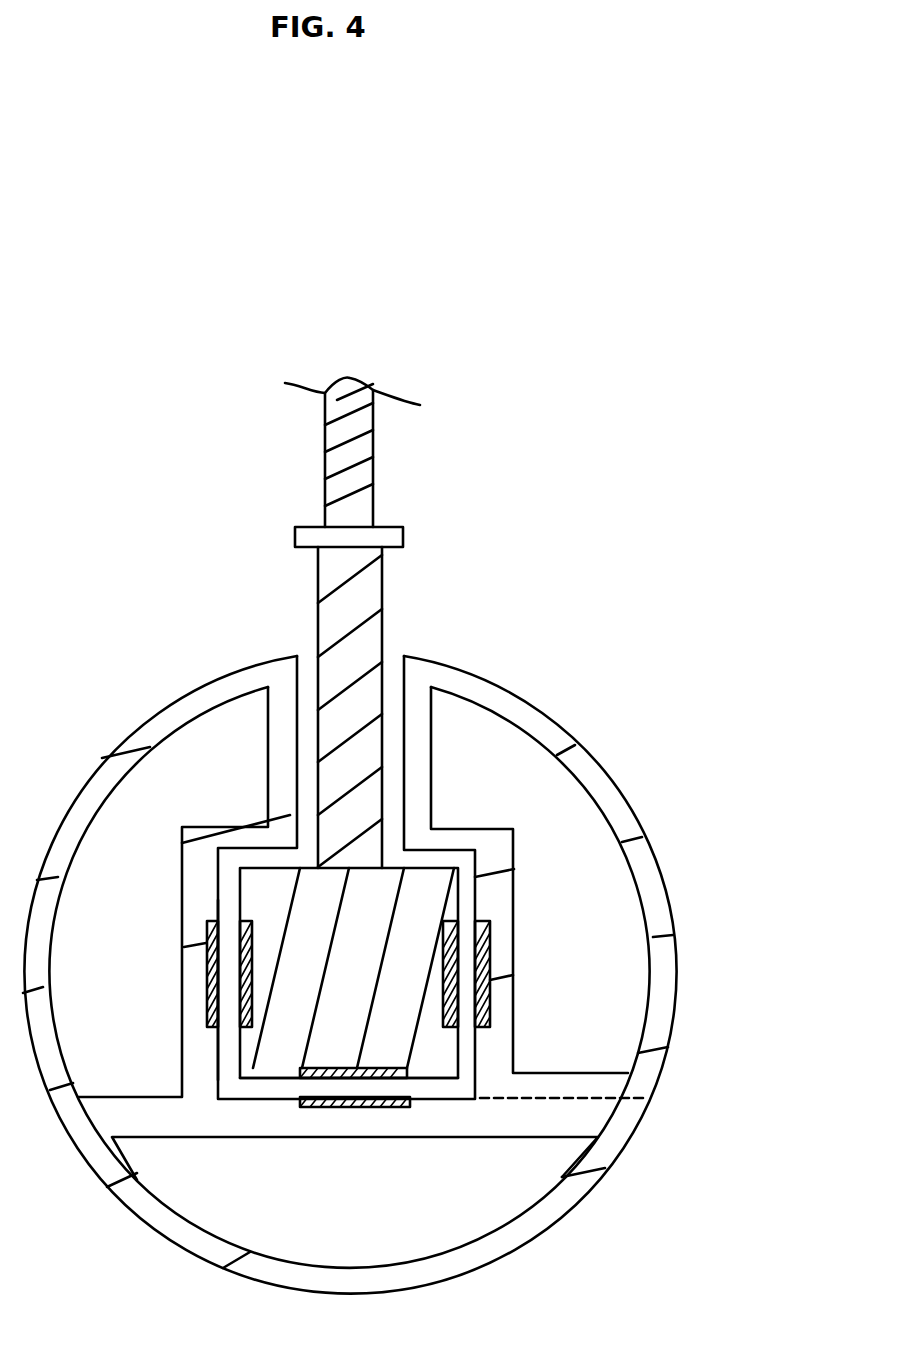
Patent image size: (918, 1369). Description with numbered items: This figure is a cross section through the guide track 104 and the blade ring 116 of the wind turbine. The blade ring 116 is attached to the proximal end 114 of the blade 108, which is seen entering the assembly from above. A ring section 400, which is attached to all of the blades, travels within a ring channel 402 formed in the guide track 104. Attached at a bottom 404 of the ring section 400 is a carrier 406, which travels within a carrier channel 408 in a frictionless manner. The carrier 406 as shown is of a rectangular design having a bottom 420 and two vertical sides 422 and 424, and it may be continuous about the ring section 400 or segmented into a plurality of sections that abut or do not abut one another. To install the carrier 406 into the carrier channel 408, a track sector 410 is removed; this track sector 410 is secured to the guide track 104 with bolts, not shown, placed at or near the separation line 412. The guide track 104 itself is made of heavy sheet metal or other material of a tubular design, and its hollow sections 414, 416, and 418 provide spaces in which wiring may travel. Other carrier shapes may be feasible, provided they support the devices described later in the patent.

The guide track 104 is at (662, 842).
The blade 108 is at (323, 403).
The proximal end 114 is at (373, 468).
The blade ring 116 is at (440, 548).
The ring section 400 is at (318, 633).
The ring channel 402 is at (404, 747).
The bottom 404 is at (385, 853).
The carrier 406 is at (483, 903).
The carrier channel 408 is at (222, 918).
The track sector 410 is at (678, 975).
The separation line 412 is at (582, 1098).
The hollow section 414 is at (223, 798).
The hollow section 416 is at (608, 945).
The hollow section 418 is at (353, 1212).
The bottom 420 is at (425, 1080).
The vertical side 422 is at (296, 1137).
The vertical side 424 is at (218, 1053).